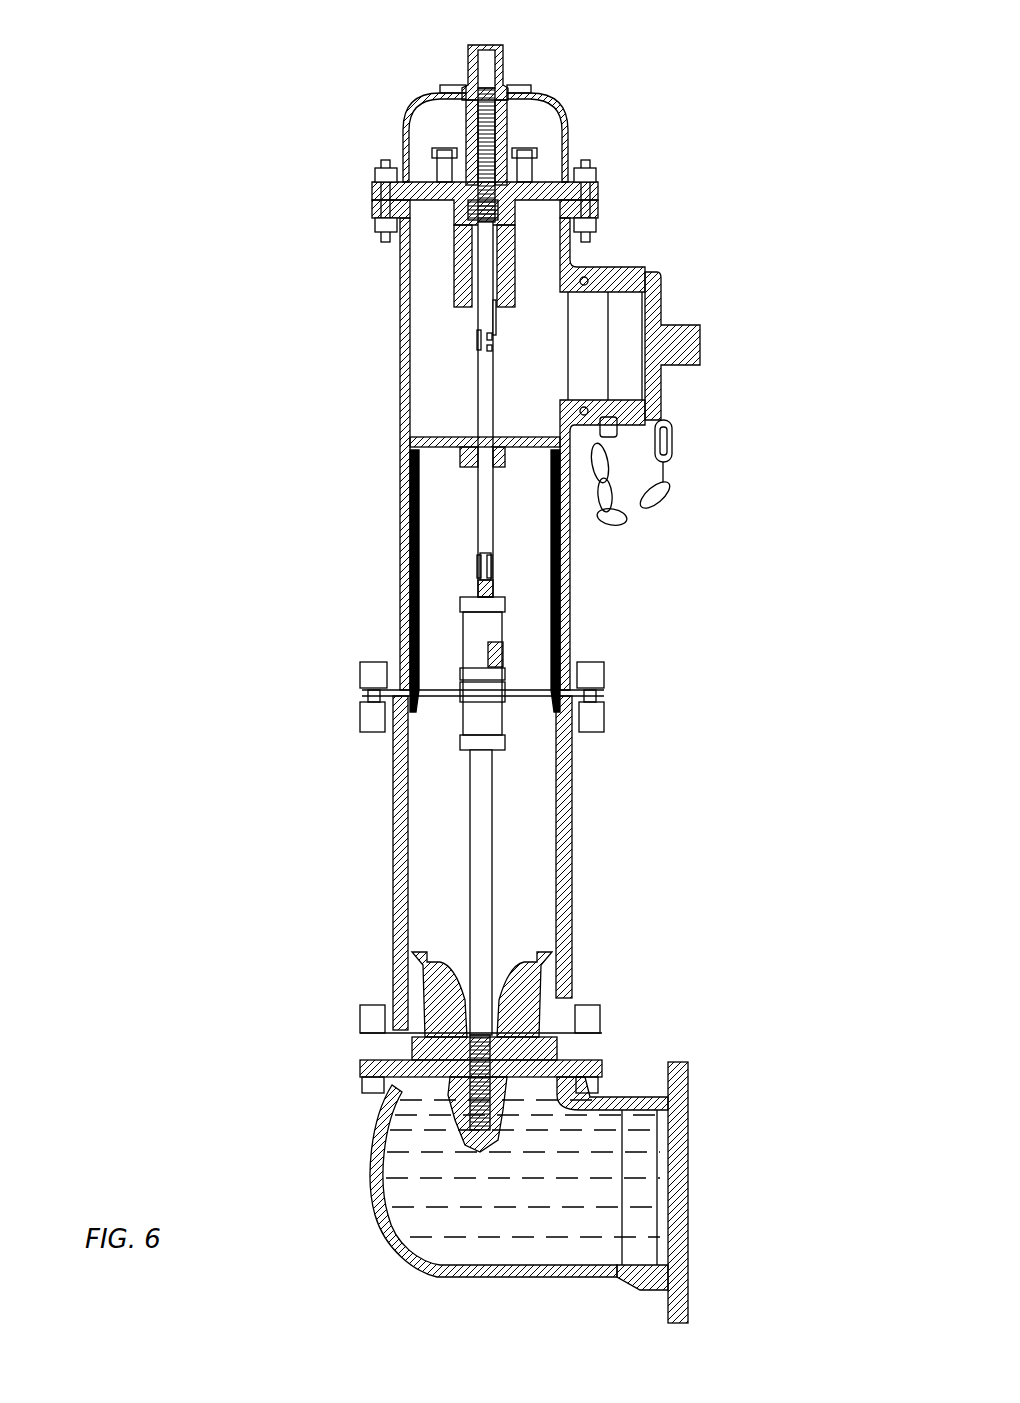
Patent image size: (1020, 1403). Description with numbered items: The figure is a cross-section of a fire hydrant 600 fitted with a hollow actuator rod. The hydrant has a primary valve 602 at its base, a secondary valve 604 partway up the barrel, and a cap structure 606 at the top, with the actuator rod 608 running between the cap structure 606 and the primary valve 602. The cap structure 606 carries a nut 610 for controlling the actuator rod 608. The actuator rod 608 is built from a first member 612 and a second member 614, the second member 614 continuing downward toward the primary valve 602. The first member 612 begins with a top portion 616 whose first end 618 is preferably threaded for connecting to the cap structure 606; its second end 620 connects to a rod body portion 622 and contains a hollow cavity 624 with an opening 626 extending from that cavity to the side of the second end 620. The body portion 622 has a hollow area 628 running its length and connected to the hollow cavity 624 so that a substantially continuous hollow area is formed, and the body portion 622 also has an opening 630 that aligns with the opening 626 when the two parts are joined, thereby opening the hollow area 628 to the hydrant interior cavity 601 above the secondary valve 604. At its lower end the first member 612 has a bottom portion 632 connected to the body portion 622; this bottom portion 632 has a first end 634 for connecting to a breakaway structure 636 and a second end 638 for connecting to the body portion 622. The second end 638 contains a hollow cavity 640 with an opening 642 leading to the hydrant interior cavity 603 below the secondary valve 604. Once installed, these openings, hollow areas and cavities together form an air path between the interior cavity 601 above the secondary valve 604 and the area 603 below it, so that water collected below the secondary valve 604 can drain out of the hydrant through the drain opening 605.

The fire hydrant 600 is at (750, 110).
The fire hydrant interior cavity above the secondary valve 601 is at (540, 230).
The primary valve 602 is at (537, 967).
The fire hydrant interior cavity below the secondary valve 603 is at (438, 677).
The secondary valve 604 is at (668, 385).
The drain opening 605 is at (567, 1002).
The cap structure 606 is at (407, 122).
The actuator rod 608 is at (480, 407).
The nut 610 is at (484, 44).
The first member 612 is at (481, 437).
The second member 614 is at (480, 850).
The top portion 616 is at (487, 256).
The first end 618 is at (530, 97).
The second end 620 is at (477, 333).
The rod body portion 622 is at (494, 413).
The hollow cavity 624 is at (497, 330).
The opening 626 is at (600, 280).
The hollow area 628 is at (652, 470).
The opening 630 is at (496, 338).
The bottom portion 632 is at (473, 588).
The first end 634 is at (493, 592).
The breakaway structure 636 is at (487, 637).
The second end 638 is at (493, 560).
The hollow cavity 640 is at (480, 553).
The opening 642 is at (473, 577).